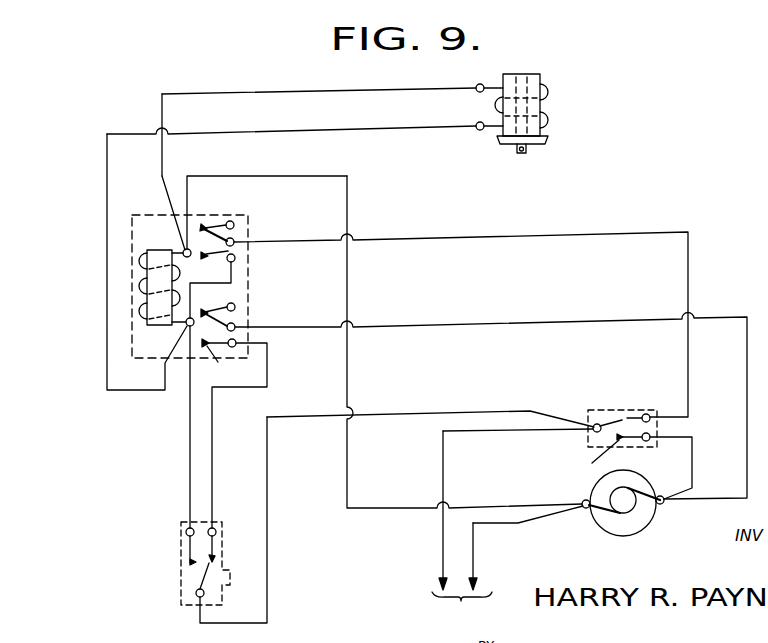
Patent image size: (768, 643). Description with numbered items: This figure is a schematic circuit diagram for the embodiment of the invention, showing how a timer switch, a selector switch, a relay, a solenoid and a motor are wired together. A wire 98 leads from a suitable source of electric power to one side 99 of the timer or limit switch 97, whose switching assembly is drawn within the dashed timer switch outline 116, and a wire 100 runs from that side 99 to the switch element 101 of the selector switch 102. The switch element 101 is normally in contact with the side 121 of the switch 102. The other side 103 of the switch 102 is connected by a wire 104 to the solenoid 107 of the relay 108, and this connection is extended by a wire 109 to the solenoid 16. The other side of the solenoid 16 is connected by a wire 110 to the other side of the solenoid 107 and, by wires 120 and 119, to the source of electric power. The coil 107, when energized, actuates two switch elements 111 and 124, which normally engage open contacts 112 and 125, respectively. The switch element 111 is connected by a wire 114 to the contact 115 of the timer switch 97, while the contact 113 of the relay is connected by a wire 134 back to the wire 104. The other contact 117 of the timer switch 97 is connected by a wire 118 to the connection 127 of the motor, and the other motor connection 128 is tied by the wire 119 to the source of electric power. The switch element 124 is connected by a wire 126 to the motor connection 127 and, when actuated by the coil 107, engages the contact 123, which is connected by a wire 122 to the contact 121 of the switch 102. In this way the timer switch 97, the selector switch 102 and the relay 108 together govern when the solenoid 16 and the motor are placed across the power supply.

The solenoid 16 is at (545, 77).
The timer or limit switch 97 is at (649, 415).
The wire 98 is at (442, 474).
The side of timer or limit switch 99 is at (592, 432).
The wire 100 is at (432, 413).
The switch element 101 is at (208, 596).
The switch 102 is at (180, 592).
The side of switch 103 is at (172, 565).
The wire 104 is at (186, 415).
The solenoid of relay 107 is at (132, 308).
The relay 108 is at (132, 345).
The wire 109 is at (127, 132).
The wire 110 is at (250, 93).
The switch element 111 is at (235, 238).
The open contact 112 is at (205, 225).
The contact 113 is at (240, 248).
The wire 114 is at (489, 231).
The contact 115 is at (620, 418).
The timer switch 116 is at (592, 419).
The contact 117 is at (601, 454).
The wire 118 is at (692, 447).
The wire 119 is at (498, 525).
The wire 120 is at (349, 193).
The side of switch 121 is at (222, 560).
The wire 122 is at (213, 404).
The contact 123 is at (226, 359).
The switch element 124 is at (240, 318).
The open contact 125 is at (213, 299).
The wire 126 is at (511, 327).
The motor connection 127 is at (662, 504).
The motor connection 128 is at (583, 501).
The wire 134 is at (210, 290).